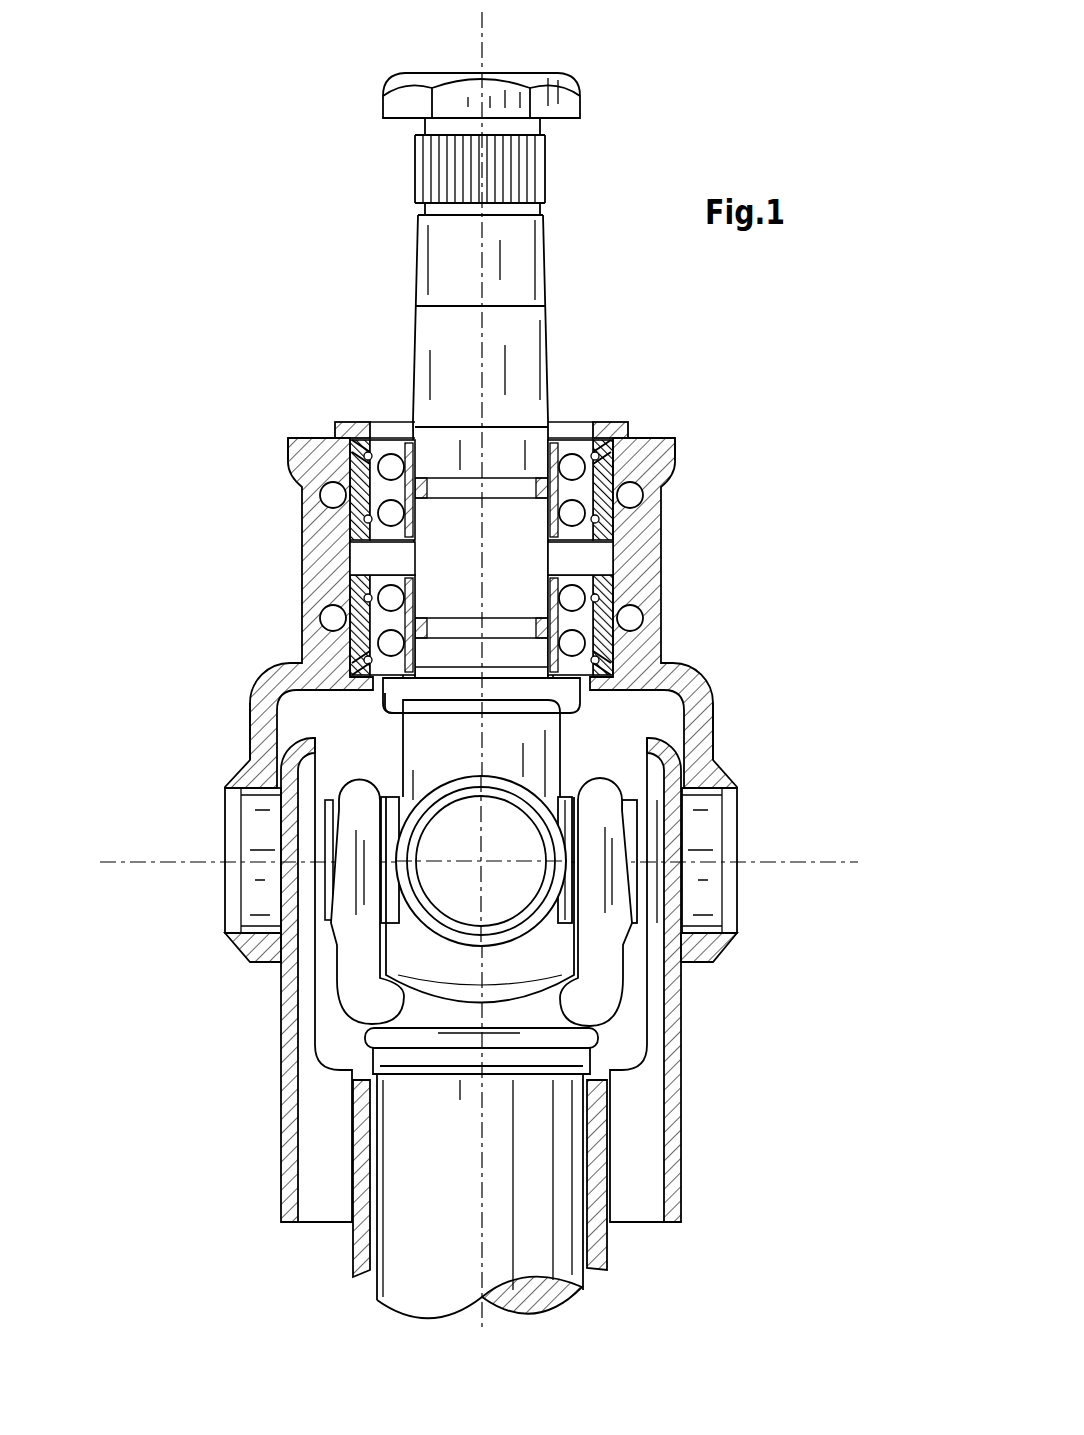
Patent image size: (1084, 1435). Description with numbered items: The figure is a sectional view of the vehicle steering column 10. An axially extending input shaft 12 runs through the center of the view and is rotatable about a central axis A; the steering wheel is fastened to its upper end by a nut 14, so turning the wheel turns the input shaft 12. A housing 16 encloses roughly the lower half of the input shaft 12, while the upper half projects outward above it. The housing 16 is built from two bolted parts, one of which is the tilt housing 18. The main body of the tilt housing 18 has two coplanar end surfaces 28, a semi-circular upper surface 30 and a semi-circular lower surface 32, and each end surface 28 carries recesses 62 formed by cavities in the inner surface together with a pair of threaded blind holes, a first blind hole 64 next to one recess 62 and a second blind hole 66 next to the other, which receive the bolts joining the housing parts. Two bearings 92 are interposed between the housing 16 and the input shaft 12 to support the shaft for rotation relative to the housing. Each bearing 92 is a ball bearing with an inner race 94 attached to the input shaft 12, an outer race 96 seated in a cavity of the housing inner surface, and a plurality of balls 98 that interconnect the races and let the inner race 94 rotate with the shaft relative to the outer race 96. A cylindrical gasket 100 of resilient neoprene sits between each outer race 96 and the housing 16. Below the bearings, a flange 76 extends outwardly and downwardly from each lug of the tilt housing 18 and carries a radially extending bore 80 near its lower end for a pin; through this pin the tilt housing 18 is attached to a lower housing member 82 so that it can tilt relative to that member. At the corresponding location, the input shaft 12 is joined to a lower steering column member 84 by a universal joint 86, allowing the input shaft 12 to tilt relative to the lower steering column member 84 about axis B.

The vehicle steering column 10 is at (313, 133).
The input shaft 12 is at (552, 273).
The nut 14 is at (505, 80).
The housing 16 is at (662, 535).
The tilt housing 18 is at (662, 480).
The end surfaces 28 is at (345, 552).
The upper surface 30 is at (345, 422).
The lower surface 32 is at (355, 695).
The recesses 62 is at (345, 457).
The first blind hole 64 is at (333, 495).
The second blind hole 66 is at (333, 618).
The flange 76 is at (714, 709).
The bore 80 is at (708, 835).
The lower housing member 82 is at (686, 1068).
The lower steering column member 84 is at (598, 1285).
The universal joint 86 is at (435, 930).
The bearing 92 is at (355, 634).
The inner race 94 is at (398, 458).
The outer race 96 is at (355, 455).
The balls 98 is at (372, 470).
The cylindrical gasket 100 is at (364, 598).